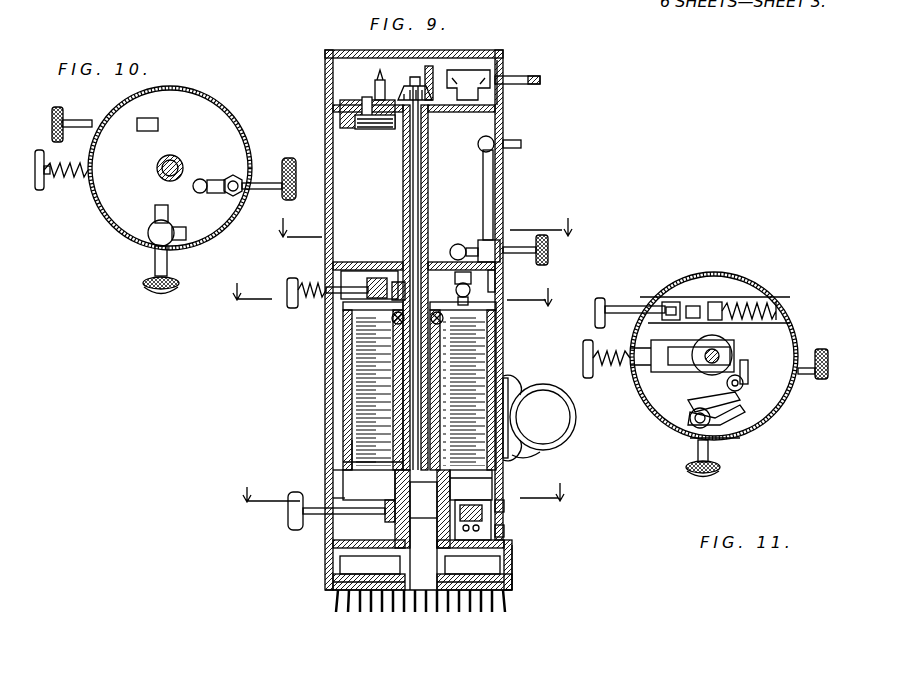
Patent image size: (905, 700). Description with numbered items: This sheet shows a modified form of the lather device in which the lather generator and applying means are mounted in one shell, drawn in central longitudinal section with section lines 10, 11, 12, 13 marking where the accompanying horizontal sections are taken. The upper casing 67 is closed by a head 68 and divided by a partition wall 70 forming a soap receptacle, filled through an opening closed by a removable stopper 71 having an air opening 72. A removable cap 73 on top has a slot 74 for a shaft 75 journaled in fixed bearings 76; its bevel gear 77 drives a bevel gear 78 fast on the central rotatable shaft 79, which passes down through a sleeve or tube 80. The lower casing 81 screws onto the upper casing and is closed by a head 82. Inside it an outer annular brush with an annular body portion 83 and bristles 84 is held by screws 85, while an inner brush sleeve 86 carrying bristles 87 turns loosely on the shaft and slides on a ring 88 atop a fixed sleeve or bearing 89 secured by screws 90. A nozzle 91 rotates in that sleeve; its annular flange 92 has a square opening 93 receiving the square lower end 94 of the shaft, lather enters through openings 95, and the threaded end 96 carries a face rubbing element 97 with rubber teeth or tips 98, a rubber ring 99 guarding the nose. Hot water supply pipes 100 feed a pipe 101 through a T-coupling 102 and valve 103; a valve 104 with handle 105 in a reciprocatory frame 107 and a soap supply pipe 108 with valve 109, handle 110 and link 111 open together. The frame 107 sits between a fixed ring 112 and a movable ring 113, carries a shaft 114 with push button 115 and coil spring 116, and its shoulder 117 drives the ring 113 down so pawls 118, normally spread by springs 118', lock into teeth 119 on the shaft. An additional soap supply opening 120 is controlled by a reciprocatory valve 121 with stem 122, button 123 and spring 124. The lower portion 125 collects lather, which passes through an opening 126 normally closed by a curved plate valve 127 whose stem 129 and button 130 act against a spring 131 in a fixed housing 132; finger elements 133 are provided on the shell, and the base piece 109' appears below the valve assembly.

In FIG. 9, the section line 10- 10 is at (436, 227).
In FIG. 9, the section line 11- 11 is at (290, 272).
In FIG. 9, the section line 12- 12 is at (399, 301).
In FIG. 9, the section line 13- 13 is at (399, 496).
In FIG. 9, the upper casing 67 is at (500, 188).
In FIG. 10, the upper casing 67 is at (116, 234).
In FIG. 11, the upper casing 67 is at (783, 404).
In FIG. 9, the head 68 is at (393, 126).
In FIG. 9, the partition wall 70 is at (347, 262).
In FIG. 10, the partition wall 70 is at (170, 168).
In FIG. 11, the partition wall 70 is at (688, 298).
In FIG. 9, the removable stopper 71 is at (372, 93).
In FIG. 9, the air opening 72 is at (357, 106).
In FIG. 9, the removable cap 73 is at (490, 52).
In FIG. 9, the slot 74 is at (505, 128).
In FIG. 9, the shaft 75 is at (540, 80).
In FIG. 9, the fixed bearings 76 is at (505, 100).
In FIG. 9, the bevel gear 77 is at (432, 72).
In FIG. 9, the bevel gear 78 is at (412, 79).
In FIG. 9, the central rotatable shaft 79 is at (425, 185).
In FIG. 10, the central rotatable shaft 79 is at (157, 174).
In FIG. 11, the central rotatable shaft 79 is at (716, 338).
In FIG. 9, the sleeve or tube 80 is at (403, 180).
In FIG. 10, the sleeve or tube 80 is at (163, 183).
In FIG. 9, the lower casing 81 is at (345, 462).
In FIG. 9, the head 82 is at (337, 588).
In FIG. 9, the annular body portion 83 is at (510, 360).
In FIG. 9, the bristles 84 is at (345, 447).
In FIG. 9, the screws 85 is at (520, 327).
In FIG. 9, the sleeve 86 is at (510, 405).
In FIG. 9, the bristles 87 is at (512, 432).
In FIG. 9, the ring 88 is at (400, 483).
In FIG. 9, the fixed sleeve or bearing 89 is at (388, 541).
In FIG. 9, the screws 90 is at (377, 551).
In FIG. 9, the nozzle 91 is at (423, 604).
In FIG. 9, the annular flange 92 is at (513, 574).
In FIG. 9, the opening 93 is at (423, 501).
In FIG. 9, the lower end of shaft 94 is at (342, 470).
In FIG. 9, the openings 95 is at (436, 516).
In FIG. 9, the externally screw-threaded lower end 96 is at (452, 608).
In FIG. 9, the face rubbing element 97 is at (380, 604).
In FIG. 9, the teeth or tips 98 is at (343, 608).
In FIG. 9, the ring 99 is at (392, 557).
In FIG. 9, the hot water supply pipes 100 is at (485, 212).
In FIG. 9, the pipe 101 is at (478, 280).
In FIG. 10, the pipe 101 is at (205, 178).
In FIG. 9, the T-coupling 102 is at (455, 244).
In FIG. 10, the T-coupling 102 is at (238, 175).
In FIG. 9, the valve 103 is at (550, 250).
In FIG. 10, the valve 103 is at (283, 196).
In FIG. 11, the valve 103 is at (816, 355).
In FIG. 9, the valve 104 is at (500, 278).
In FIG. 11, the valve 104 is at (727, 386).
In FIG. 11, the handle 105 is at (747, 382).
In FIG. 9, the reciprocatory frame 107 is at (330, 325).
In FIG. 11, the reciprocatory frame 107 is at (663, 369).
In FIG. 10, the soap supply pipe 108 is at (170, 215).
In FIG. 11, the soap supply pipe 108 is at (729, 435).
In FIG. 10, the valve 109 is at (126, 273).
In FIG. 11, the valve 109 is at (688, 474).
In FIG. 10, the lower base 109' is at (155, 307).
In FIG. 11, the lower base 109' is at (711, 498).
In FIG. 11, the handle 110 is at (690, 414).
In FIG. 11, the link 111 is at (742, 433).
In FIG. 9, the fixed ring 112 is at (346, 275).
In FIG. 9, the movable ring 113 is at (370, 345).
In FIG. 11, the movable ring 113 is at (657, 432).
In FIG. 9, the shaft 114 is at (322, 305).
In FIG. 10, the shaft 114 is at (56, 172).
In FIG. 9, the push button 115 is at (310, 305).
In FIG. 10, the push button 115 is at (42, 192).
In FIG. 11, the push button 115 is at (640, 378).
In FIG. 9, the compressible coil spring 116 is at (306, 275).
In FIG. 10, the compressible coil spring 116 is at (63, 195).
In FIG. 9, the shoulder 117 is at (352, 342).
In FIG. 9, the pawls 118 is at (488, 325).
In FIG. 9, the springs 118' is at (350, 390).
In FIG. 9, the teeth 119 is at (503, 338).
In FIG. 10, the additional soap supply opening 120 is at (148, 132).
In FIG. 11, the additional soap supply opening 120 is at (702, 305).
In FIG. 11, the reciprocatory valve 121 is at (680, 302).
In FIG. 10, the stem 122 is at (78, 126).
In FIG. 11, the stem 122 is at (633, 306).
In FIG. 10, the button 123 is at (48, 115).
In FIG. 11, the button 123 is at (611, 302).
In FIG. 11, the spring 124 is at (773, 305).
In FIG. 9, the lower portion of casing 125 is at (332, 500).
In FIG. 9, the opening 126 is at (471, 485).
In FIG. 9, the curved plate valve 127 is at (505, 520).
In FIG. 9, the stem 129 is at (386, 526).
In FIG. 9, the button 130 is at (287, 514).
In FIG. 9, the spring 131 is at (520, 507).
In FIG. 9, the fixed housing 132 is at (512, 530).
In FIG. 9, the elements 133 is at (562, 447).